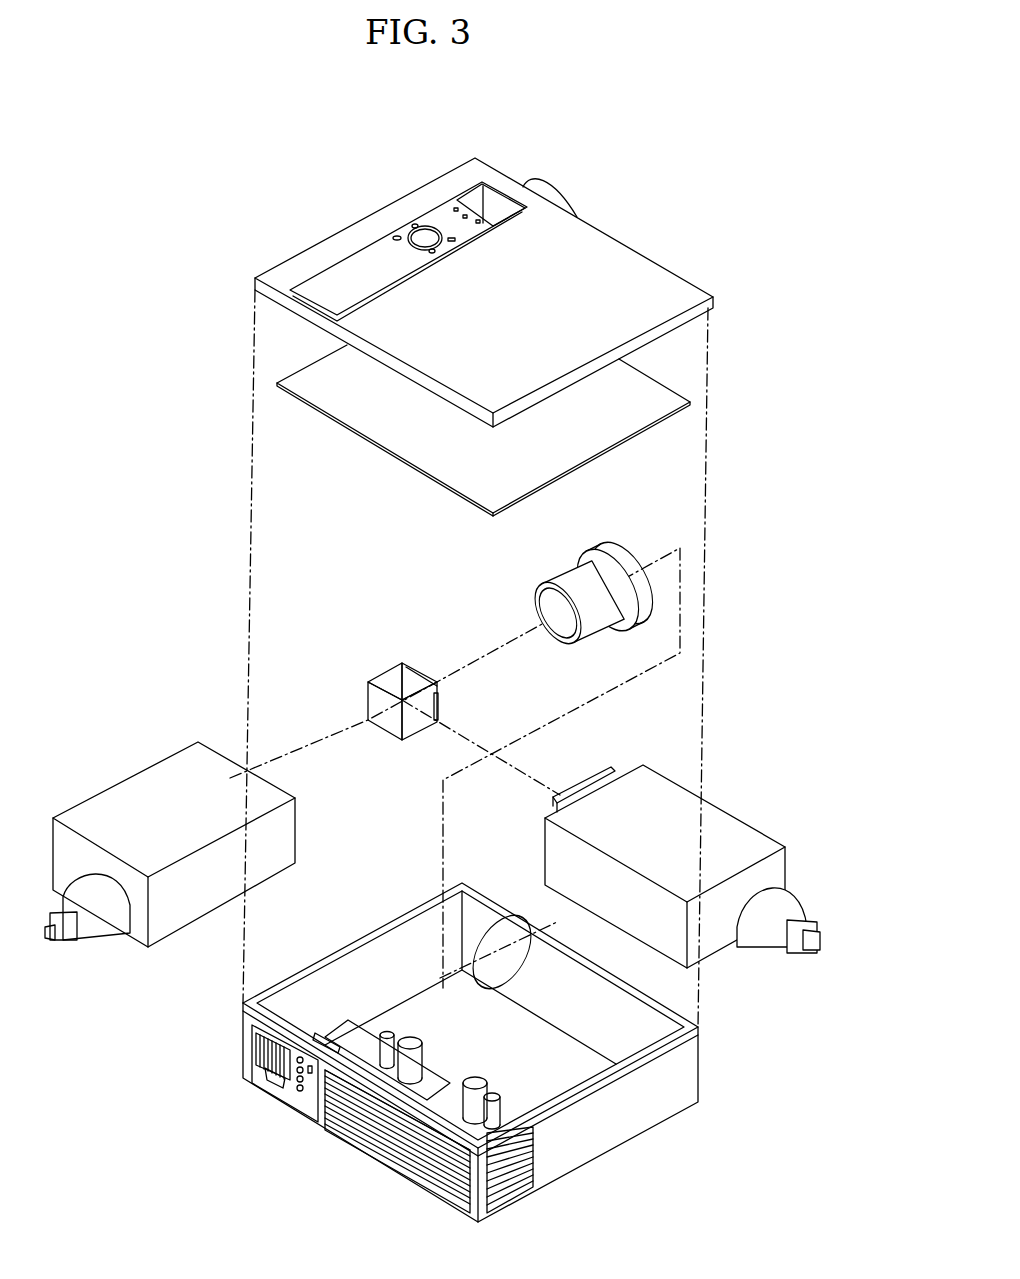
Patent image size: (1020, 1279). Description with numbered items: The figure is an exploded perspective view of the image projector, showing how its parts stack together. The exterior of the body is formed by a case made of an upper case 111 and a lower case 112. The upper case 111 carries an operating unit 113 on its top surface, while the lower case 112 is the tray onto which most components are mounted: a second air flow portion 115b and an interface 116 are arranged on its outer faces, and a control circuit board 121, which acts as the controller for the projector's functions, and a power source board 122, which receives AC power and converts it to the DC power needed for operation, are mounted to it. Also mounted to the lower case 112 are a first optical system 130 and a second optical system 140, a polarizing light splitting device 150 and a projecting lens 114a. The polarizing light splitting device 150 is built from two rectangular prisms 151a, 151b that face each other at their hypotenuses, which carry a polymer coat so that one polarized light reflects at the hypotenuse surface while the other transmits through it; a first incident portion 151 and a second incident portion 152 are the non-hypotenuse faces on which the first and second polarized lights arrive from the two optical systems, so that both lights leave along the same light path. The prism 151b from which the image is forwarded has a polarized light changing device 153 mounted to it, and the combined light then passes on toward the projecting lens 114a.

The upper case 111 is at (665, 282).
The lower case 112 is at (647, 1123).
The operating unit 113 is at (443, 222).
The projecting lens 114a is at (570, 578).
The second air flow portion 115b is at (390, 1153).
The interface 116 is at (292, 1090).
The control circuit board 121 is at (392, 440).
The power source board 122 is at (387, 1077).
The first optical system 130 is at (118, 765).
The second optical system 140 is at (737, 792).
The polarizing light splitting device 150 is at (405, 702).
The first incident portion 151 is at (373, 705).
The rectangular prism 151a is at (385, 681).
The rectangular prism 151b is at (419, 681).
The second incident portion 152 is at (412, 728).
The polarized light changing device 153 is at (440, 697).